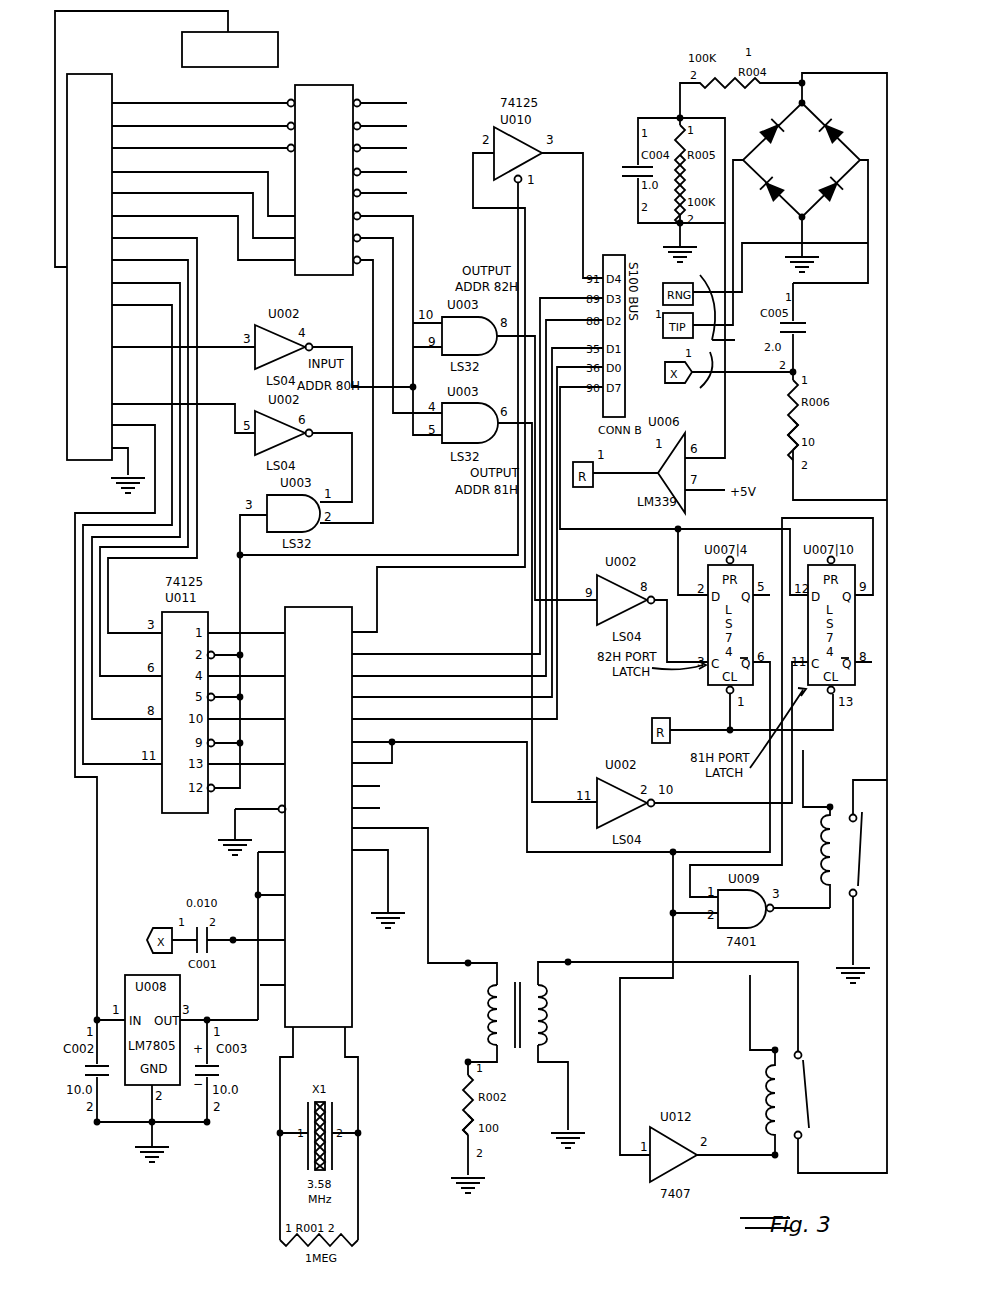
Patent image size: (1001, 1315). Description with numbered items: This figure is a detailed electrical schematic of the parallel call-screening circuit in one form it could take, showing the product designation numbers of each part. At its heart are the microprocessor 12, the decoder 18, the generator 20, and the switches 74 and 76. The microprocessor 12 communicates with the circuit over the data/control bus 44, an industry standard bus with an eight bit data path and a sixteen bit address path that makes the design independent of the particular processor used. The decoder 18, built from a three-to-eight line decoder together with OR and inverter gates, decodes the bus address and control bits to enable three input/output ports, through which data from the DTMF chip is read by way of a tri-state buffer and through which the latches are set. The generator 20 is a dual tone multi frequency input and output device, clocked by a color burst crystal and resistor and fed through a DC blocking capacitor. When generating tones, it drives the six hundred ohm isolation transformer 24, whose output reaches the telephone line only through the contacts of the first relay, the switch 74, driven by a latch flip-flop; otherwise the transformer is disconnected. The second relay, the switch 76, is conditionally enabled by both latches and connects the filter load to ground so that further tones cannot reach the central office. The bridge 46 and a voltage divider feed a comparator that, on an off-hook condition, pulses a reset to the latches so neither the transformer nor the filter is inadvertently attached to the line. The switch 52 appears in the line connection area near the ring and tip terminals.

The microprocessor 12 is at (257, 32).
The data/control bus 44 is at (118, 74).
The decoder 18 is at (340, 85).
The bridge 46 is at (750, 120).
The switch S2 52 is at (728, 331).
The DTMF generator 20 is at (342, 968).
The transformer 24 is at (566, 959).
The switch 76 is at (804, 838).
The switch 74 is at (824, 1095).